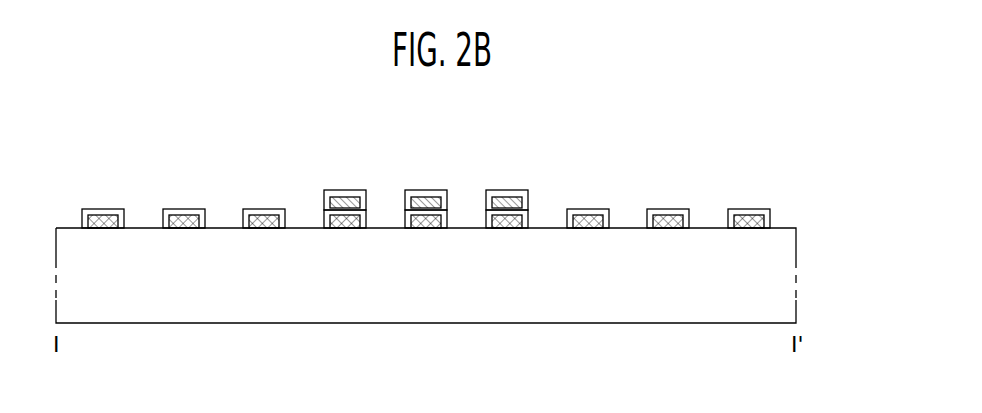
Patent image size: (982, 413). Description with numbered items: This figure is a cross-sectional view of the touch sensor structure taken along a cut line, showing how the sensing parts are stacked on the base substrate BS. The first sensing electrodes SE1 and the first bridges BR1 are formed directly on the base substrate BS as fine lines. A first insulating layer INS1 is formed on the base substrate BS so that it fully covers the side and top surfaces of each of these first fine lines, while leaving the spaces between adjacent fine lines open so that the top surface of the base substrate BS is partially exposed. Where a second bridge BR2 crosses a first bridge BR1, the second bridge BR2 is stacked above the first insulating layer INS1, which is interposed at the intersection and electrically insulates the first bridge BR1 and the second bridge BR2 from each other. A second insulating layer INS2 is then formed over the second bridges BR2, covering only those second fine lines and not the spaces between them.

The base substrate BS is at (792, 298).
The first insulating layer INS1 is at (98, 213).
The second insulating layer INS2 is at (333, 191).
The first sensing electrode SE1 is at (258, 228).
The first bridge BR1 is at (340, 228).
The second bridge BR2 is at (350, 202).